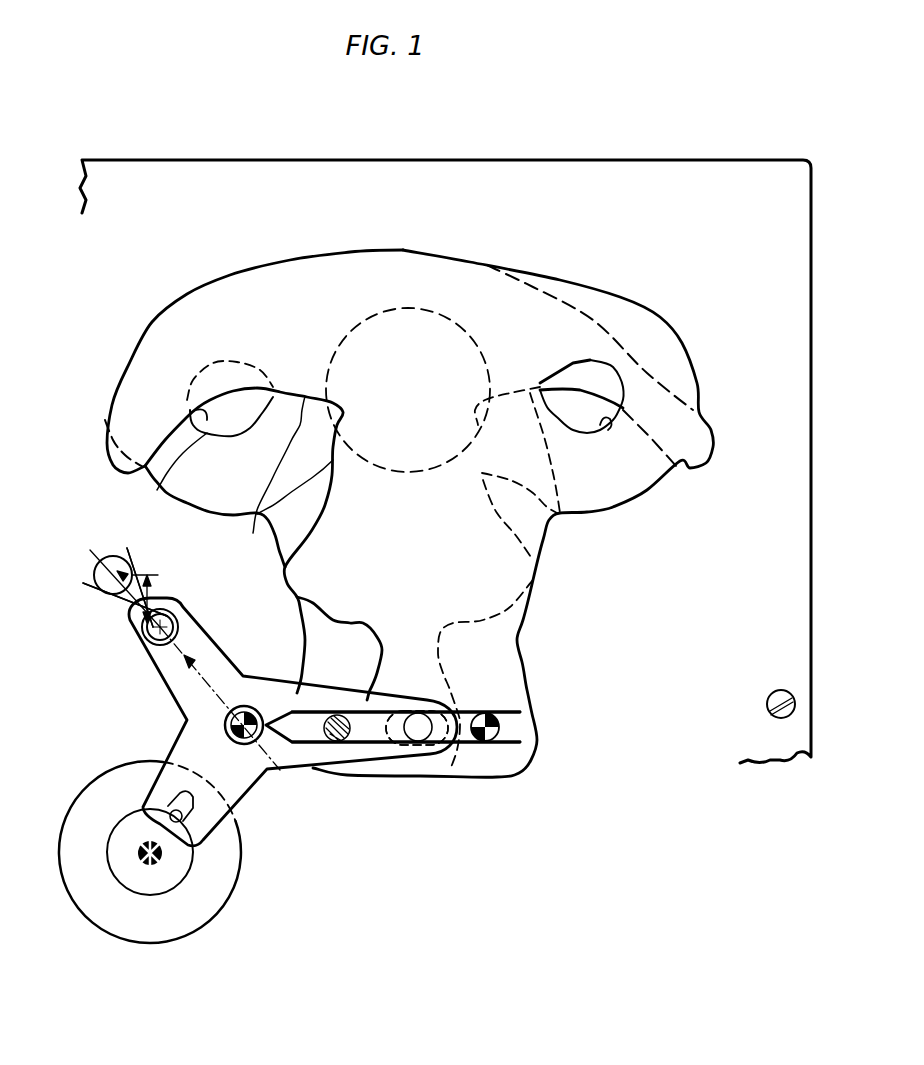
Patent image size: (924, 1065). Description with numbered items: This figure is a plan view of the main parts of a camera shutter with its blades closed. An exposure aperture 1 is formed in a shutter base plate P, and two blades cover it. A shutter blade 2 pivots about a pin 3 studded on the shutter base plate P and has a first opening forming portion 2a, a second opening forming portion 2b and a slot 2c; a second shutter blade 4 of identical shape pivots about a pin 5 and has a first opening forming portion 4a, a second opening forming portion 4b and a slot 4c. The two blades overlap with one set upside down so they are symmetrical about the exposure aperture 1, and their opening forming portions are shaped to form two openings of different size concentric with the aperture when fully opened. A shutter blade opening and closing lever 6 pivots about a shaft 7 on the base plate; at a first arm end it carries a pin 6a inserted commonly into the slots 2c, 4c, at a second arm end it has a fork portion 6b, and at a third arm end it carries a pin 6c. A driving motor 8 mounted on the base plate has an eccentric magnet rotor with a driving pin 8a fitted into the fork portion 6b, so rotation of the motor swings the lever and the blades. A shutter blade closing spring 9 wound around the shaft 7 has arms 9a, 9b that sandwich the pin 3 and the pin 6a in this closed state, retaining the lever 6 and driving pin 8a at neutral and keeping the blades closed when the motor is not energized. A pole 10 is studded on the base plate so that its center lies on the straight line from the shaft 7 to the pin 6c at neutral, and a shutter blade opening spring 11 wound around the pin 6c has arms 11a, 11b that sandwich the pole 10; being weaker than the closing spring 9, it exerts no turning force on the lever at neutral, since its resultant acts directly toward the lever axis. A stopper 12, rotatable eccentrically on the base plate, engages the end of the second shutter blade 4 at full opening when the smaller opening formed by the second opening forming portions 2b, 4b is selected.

The shutter base plate P is at (598, 159).
The exposure aperture 1 is at (406, 308).
The shutter blade 2 is at (649, 302).
The first opening forming portion 2a is at (276, 477).
The second opening forming portion 2b is at (608, 430).
The slot 2c is at (390, 773).
The pin 3 is at (493, 746).
The second shutter blade 4 is at (151, 314).
The first opening forming portion 4a is at (557, 513).
The second opening forming portion 4b is at (202, 456).
The slot 4c is at (417, 728).
The pin 5 is at (297, 693).
The shutter blade opening and closing lever 6 is at (267, 686).
The pin 6a is at (417, 741).
The fork portion 6b is at (198, 822).
The pin 6c is at (177, 626).
The shaft 7 is at (242, 745).
The driving motor 8 is at (229, 903).
The driving pin 8a is at (143, 807).
The shutter blade closing spring 9 is at (478, 703).
The arm 9a is at (513, 708).
The arm 9b is at (523, 756).
The pole 10 is at (101, 569).
The shutter blade opening spring 11 is at (121, 604).
The arm 11a is at (131, 556).
The arm 11b is at (90, 589).
The stopper 12 is at (777, 718).